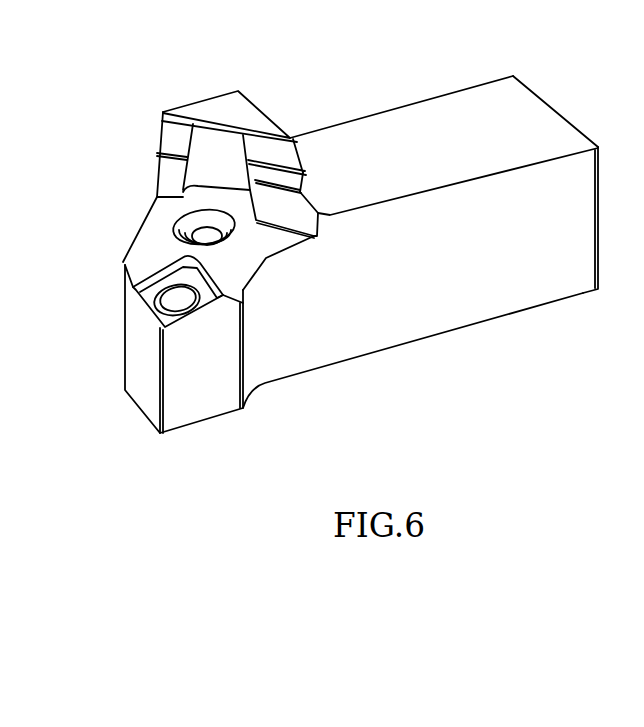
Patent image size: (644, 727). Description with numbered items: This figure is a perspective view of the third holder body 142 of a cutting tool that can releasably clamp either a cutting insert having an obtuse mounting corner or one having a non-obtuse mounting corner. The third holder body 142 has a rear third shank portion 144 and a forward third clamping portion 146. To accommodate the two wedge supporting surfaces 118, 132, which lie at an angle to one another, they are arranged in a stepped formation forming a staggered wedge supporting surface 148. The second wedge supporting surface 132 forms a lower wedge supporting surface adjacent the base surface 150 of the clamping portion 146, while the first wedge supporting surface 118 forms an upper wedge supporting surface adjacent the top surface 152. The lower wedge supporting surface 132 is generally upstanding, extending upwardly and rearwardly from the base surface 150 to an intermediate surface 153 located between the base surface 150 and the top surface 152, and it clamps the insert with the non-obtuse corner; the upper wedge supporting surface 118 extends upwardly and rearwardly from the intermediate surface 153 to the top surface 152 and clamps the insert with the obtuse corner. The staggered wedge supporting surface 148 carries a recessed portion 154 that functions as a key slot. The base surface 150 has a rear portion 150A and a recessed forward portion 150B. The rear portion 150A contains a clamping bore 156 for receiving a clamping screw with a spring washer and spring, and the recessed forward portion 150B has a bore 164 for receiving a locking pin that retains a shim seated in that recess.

The first wedge supporting surface 118 is at (168, 137).
The second wedge supporting surface 132 is at (166, 176).
The third holder body 142 is at (428, 104).
The rear third shank portion 144 is at (477, 103).
The forward third clamping portion 146 is at (217, 206).
The staggered wedge supporting surface 148 is at (278, 210).
The base surface 150 is at (237, 262).
The rear portion 150A is at (145, 262).
The recessed forward portion 150B is at (163, 320).
The top surface 152 is at (190, 108).
The intermediate surface 153 is at (303, 198).
The recessed portion 154 is at (226, 153).
The clamping bore 156 is at (185, 227).
The bore 164 is at (173, 305).